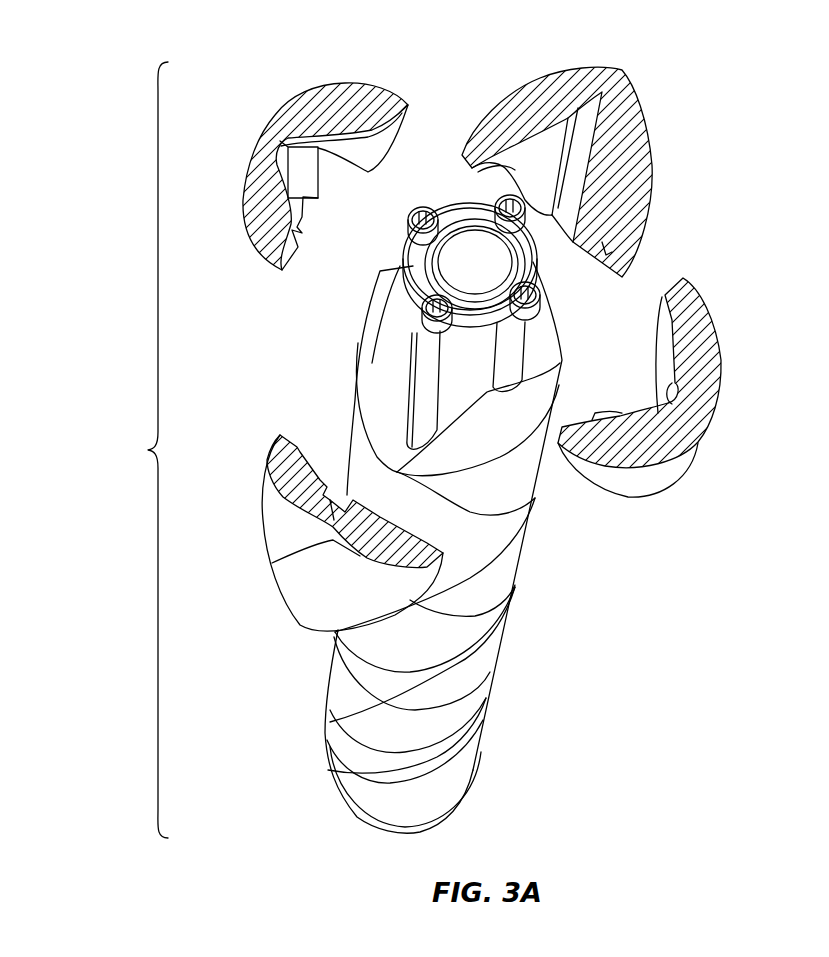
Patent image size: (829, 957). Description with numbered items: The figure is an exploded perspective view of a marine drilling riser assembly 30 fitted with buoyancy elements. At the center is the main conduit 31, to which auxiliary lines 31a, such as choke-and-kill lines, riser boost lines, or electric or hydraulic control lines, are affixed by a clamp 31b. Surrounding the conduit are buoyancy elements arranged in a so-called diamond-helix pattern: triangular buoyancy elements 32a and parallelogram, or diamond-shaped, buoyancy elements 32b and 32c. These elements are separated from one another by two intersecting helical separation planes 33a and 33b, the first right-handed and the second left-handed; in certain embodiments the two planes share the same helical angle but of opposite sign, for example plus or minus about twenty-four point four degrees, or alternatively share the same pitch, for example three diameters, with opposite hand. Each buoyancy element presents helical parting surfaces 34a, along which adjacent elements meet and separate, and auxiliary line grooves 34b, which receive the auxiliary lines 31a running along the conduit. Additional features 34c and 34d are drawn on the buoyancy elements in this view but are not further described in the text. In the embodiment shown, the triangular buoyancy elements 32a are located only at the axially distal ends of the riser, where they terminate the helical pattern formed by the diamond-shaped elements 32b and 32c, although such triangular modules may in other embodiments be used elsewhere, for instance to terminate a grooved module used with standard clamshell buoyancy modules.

The marine drilling riser assembly 30 is at (140, 450).
The main conduit 31 is at (520, 258).
The auxiliary lines 31a is at (568, 294).
The clamp 31b is at (500, 340).
The triangular buoyancy elements 32a is at (252, 140).
The parallelogram buoyancy elements 32b is at (647, 128).
The parallelogram buoyancy elements 32c is at (517, 497).
The helical separation plane 33a is at (478, 437).
The helical separation plane 33b is at (362, 420).
The helical parting surfaces 34a is at (367, 147).
The auxiliary line grooves 34b is at (290, 150).
The segment cut faces 34c is at (255, 172).
The segment slots 34d is at (598, 108).